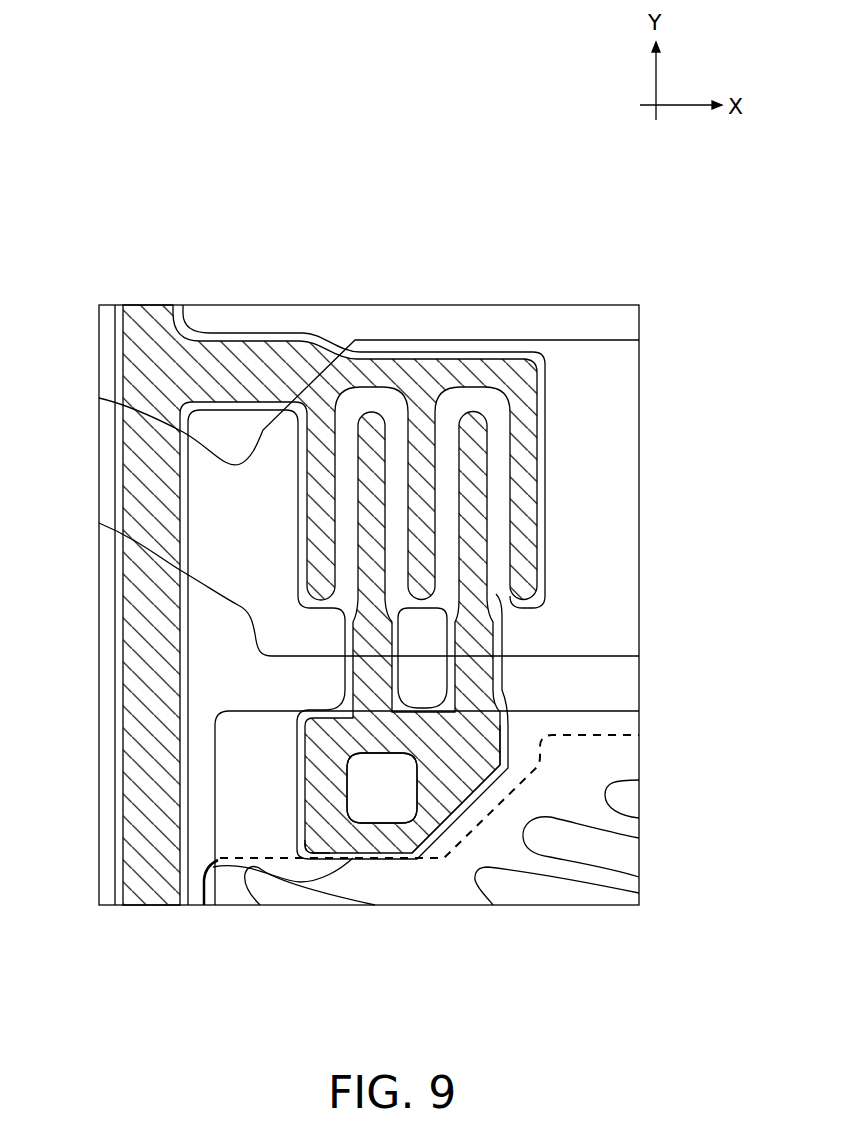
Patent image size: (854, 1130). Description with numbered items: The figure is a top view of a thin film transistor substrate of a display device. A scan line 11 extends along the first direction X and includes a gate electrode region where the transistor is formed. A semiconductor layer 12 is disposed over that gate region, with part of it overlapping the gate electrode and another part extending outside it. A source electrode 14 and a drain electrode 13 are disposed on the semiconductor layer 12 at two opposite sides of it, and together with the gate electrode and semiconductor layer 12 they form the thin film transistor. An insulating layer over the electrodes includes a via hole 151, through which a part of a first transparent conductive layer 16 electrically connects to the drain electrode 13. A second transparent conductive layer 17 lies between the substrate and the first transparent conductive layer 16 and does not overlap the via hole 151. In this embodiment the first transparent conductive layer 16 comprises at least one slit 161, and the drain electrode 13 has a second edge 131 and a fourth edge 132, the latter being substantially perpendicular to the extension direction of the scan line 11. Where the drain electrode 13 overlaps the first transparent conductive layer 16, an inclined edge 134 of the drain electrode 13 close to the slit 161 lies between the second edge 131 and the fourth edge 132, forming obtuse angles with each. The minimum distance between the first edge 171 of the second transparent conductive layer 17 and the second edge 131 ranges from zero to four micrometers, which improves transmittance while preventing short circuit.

The scan line 11 is at (600, 535).
The semiconductor layer 12 is at (347, 675).
The drain electrode 13 is at (320, 750).
The second edge 131 is at (317, 857).
The fourth edge 132 is at (510, 733).
The inclined edge 134 is at (483, 797).
The source electrode 14 is at (313, 508).
The via hole 151 is at (360, 793).
The first transparent conductive layer 16 is at (618, 721).
The slit 161 is at (618, 857).
The second transparent conductive layer 17 is at (615, 735).
The first edge 171 is at (213, 867).